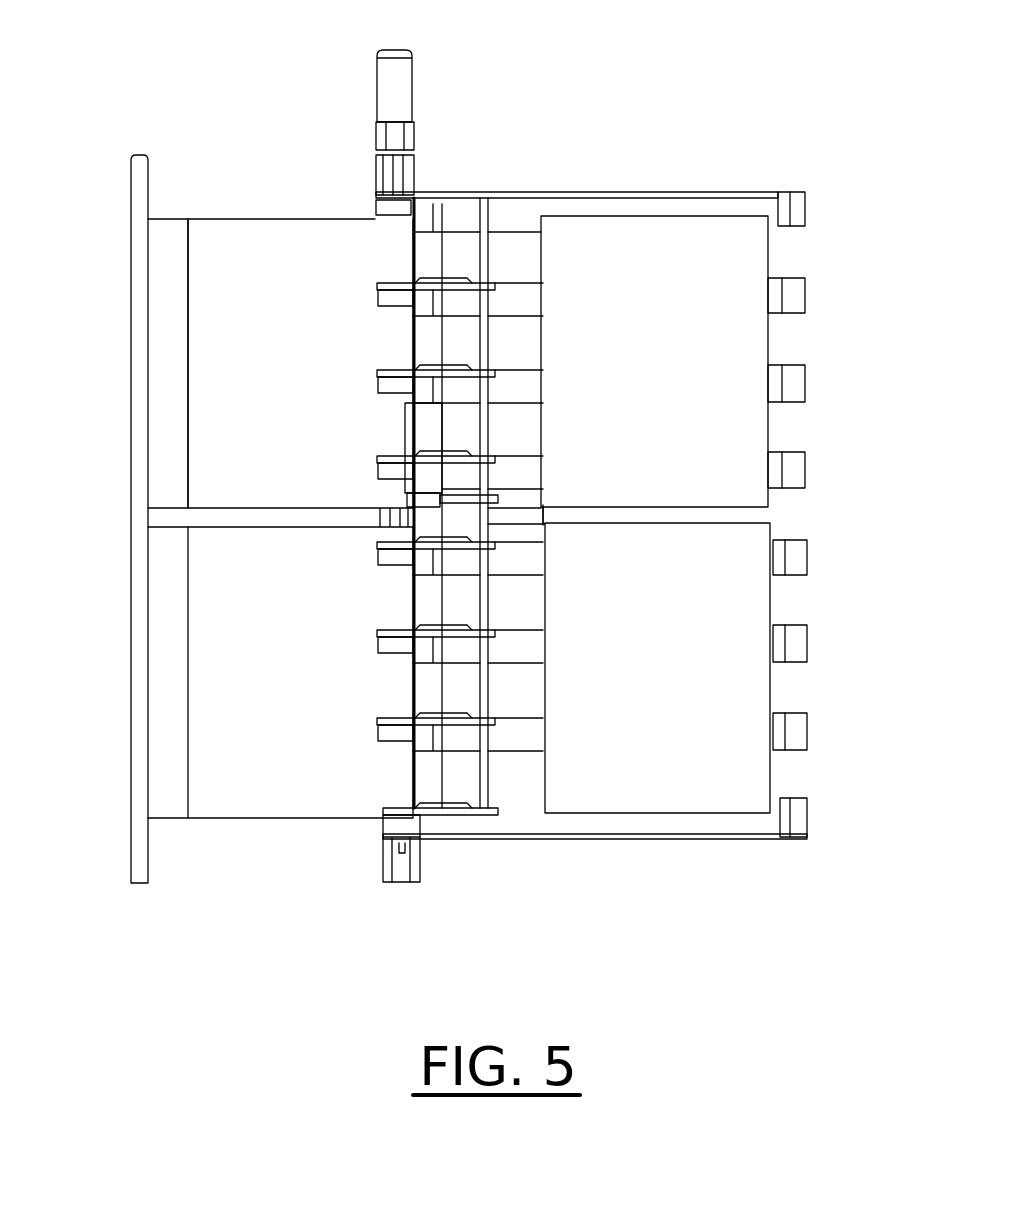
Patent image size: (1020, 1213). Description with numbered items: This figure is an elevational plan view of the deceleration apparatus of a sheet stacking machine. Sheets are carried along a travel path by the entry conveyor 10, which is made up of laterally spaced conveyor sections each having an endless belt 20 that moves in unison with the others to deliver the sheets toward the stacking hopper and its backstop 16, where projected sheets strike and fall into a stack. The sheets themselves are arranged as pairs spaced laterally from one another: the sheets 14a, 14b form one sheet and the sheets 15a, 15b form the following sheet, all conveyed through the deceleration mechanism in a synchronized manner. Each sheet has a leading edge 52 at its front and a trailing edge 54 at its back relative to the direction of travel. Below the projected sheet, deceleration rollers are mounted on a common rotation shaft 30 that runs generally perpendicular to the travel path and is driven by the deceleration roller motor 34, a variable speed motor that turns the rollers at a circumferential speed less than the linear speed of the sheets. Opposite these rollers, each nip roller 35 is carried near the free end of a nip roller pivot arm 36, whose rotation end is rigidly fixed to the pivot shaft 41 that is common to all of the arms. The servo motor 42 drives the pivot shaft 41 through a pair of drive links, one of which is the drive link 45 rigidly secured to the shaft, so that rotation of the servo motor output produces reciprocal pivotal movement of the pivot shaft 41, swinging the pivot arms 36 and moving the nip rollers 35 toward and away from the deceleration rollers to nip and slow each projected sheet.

The entry conveyor 10 is at (808, 549).
The sheet 14a is at (213, 738).
The sheet 14b is at (312, 325).
The sheet 15a is at (697, 708).
The sheet 15b is at (670, 272).
The backstop 16 is at (128, 382).
The endless belt 20 is at (692, 827).
The rotation shaft 30 is at (403, 850).
The deceleration roller motor 34 is at (387, 98).
The nip roller 35 is at (387, 643).
The nip roller pivot arm 36 is at (447, 640).
The pivot shaft 41 is at (483, 255).
The servo motor 42 is at (425, 428).
The drive link 45 is at (475, 500).
The leading edge 52 is at (183, 292).
The trailing edge 54 is at (773, 617).